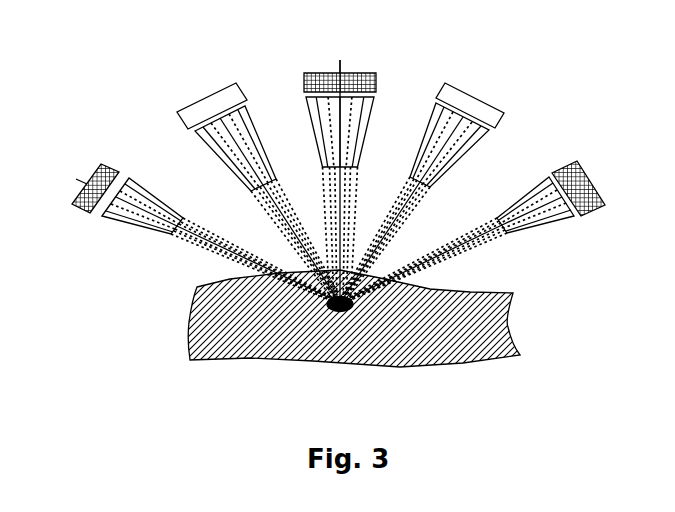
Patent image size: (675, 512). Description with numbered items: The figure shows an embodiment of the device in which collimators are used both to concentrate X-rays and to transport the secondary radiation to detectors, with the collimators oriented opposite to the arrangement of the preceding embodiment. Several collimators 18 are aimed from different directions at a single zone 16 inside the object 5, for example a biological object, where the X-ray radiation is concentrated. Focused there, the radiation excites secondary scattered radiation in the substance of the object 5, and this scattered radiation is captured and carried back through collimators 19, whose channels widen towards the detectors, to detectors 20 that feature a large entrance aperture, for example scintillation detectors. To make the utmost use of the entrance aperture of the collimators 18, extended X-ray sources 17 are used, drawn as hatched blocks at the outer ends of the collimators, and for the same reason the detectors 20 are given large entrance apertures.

The object 5 is at (327, 304).
The zone 16 is at (325, 308).
The extended X-ray source 17 is at (84, 212).
The collimator 18 is at (125, 222).
The collimator 19 is at (200, 137).
The detector 20 is at (190, 112).